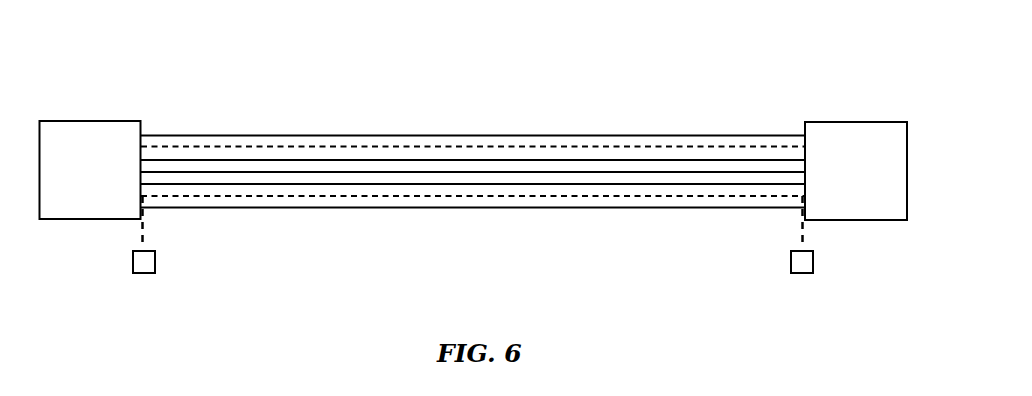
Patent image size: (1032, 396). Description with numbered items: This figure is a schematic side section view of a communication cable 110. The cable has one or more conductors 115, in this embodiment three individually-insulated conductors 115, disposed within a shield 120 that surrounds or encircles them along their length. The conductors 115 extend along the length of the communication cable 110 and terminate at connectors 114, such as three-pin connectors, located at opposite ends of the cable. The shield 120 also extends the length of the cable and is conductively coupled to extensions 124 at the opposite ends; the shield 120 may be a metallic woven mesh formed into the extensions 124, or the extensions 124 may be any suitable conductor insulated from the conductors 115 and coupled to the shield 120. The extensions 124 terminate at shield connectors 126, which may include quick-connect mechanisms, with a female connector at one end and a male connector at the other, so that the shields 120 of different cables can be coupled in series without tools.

The communication cable 110 is at (725, 51).
The connectors 114 is at (90, 121).
The conductors 115 is at (400, 183).
The shield 120 is at (473, 159).
The extensions 124 is at (145, 233).
The shield connectors 126 is at (143, 277).